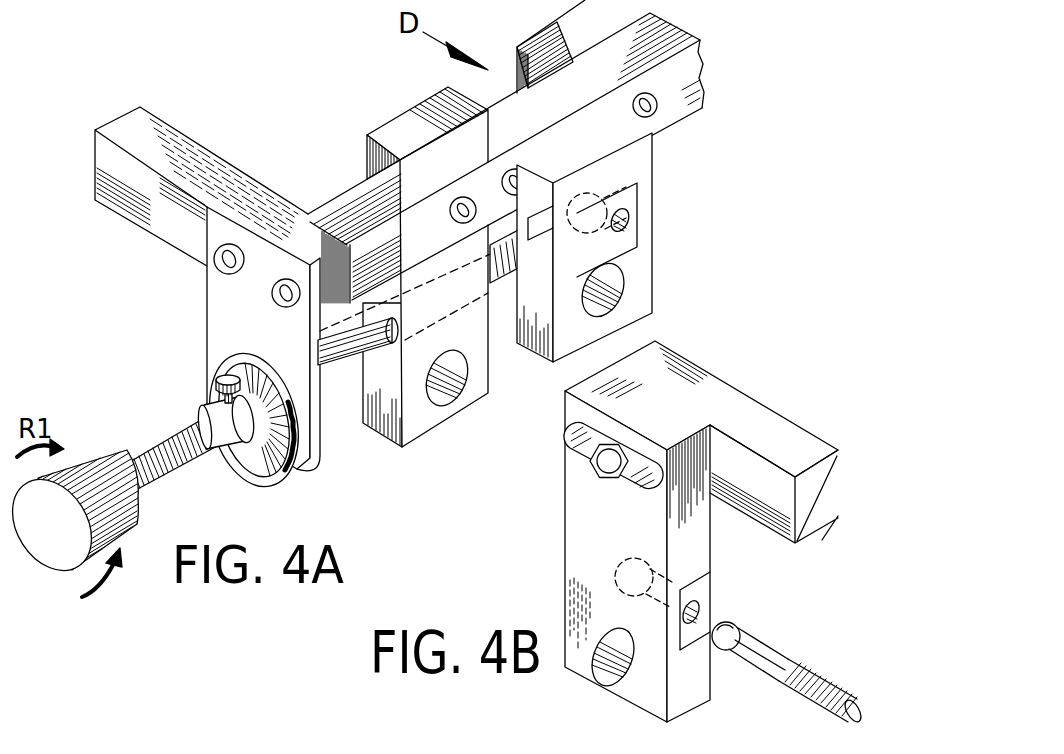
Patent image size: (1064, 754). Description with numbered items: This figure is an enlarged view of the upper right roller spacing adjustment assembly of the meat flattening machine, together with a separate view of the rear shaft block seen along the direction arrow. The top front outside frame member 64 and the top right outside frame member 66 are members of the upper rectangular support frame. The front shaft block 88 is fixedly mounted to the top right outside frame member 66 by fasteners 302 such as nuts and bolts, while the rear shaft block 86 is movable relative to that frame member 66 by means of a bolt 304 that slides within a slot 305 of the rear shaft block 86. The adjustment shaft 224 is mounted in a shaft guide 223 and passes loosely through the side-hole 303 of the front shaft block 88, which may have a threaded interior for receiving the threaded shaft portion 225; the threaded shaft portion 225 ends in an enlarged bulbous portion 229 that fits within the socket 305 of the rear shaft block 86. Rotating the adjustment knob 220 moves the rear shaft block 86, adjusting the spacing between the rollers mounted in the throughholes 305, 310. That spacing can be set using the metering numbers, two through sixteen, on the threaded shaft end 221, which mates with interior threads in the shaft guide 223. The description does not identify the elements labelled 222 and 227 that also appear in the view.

In FIG. 4A, the top front outside frame member 64 is at (190, 148).
In FIG. 4A, the top right outside frame member 66 is at (362, 193).
In FIG. 4B, the top right outside frame member 66 is at (772, 427).
In FIG. 4A, the rear shaft block 86 is at (653, 233).
In FIG. 4B, the rear shaft block 86 is at (573, 512).
In FIG. 4A, the front shaft block 88 is at (392, 417).
In FIG. 4A, the fasteners 302 is at (505, 172).
In FIG. 4A, the side-hole 303 is at (457, 276).
In FIG. 4A, the bolt 304 is at (657, 108).
In FIG. 4B, the bolt 304 is at (609, 444).
In FIG. 4A, the slot 305 is at (577, 205).
In FIG. 4B, the slot 305 is at (617, 565).
In FIG. 4A, the throughhole 310 is at (614, 298).
In FIG. 4B, the throughhole 310 is at (605, 664).
In FIG. 4A, the adjustment knob 220 is at (88, 452).
In FIG. 4A, the threaded shaft end 221 is at (168, 468).
In FIG. 4A, the set screw 222 is at (224, 378).
In FIG. 4A, the shaft guide 223 is at (267, 484).
In FIG. 4A, the adjustment shaft 224 is at (340, 367).
In FIG. 4A, the threaded shaft portion 225 is at (503, 284).
In FIG. 4B, the threaded shaft portion 225 is at (792, 688).
In FIG. 4B, the shank 227 is at (766, 650).
In FIG. 4B, the enlarged bulbous portion 229 is at (733, 624).